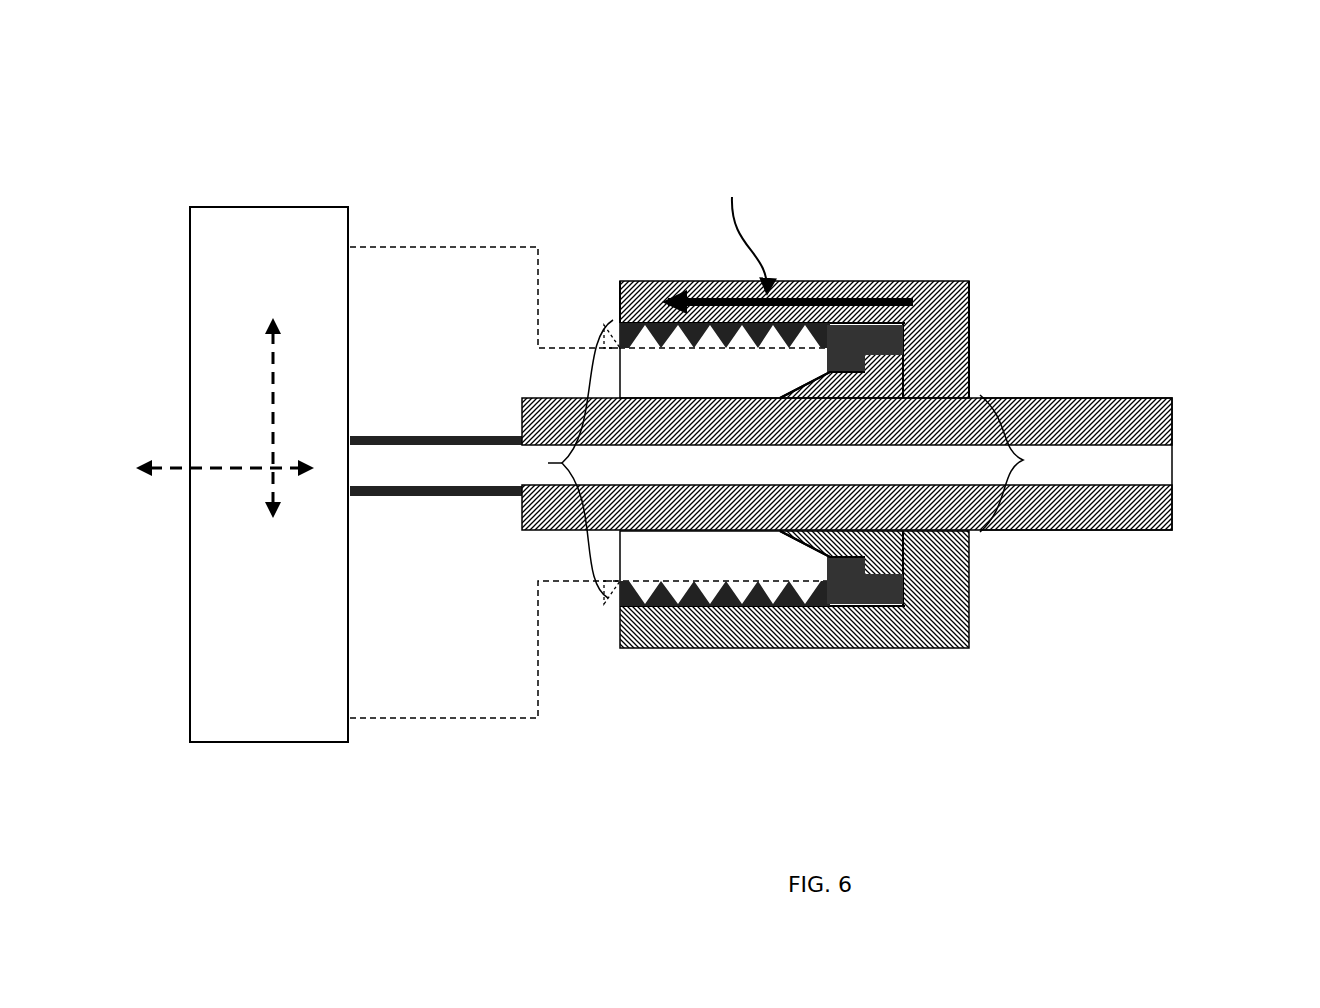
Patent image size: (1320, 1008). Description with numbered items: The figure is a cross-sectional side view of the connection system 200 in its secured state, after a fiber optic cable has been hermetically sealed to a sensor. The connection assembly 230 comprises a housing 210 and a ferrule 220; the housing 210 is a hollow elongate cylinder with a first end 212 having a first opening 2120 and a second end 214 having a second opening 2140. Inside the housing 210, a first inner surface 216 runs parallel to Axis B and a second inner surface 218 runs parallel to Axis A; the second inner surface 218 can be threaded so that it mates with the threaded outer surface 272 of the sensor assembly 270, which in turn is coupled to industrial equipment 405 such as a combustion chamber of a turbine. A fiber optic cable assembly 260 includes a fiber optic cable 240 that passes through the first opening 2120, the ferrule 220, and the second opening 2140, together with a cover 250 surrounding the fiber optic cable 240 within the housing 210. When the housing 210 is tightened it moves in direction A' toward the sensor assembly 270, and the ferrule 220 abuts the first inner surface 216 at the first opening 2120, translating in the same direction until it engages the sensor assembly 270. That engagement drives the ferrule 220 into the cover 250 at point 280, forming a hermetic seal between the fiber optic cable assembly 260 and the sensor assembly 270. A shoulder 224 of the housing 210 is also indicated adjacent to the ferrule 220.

The connection system 200 is at (325, 138).
The industrial equipment 405 is at (247, 698).
The sensor assembly 270 is at (420, 612).
The outer surface 272 is at (608, 596).
The second end 214 is at (614, 305).
The housing 210 is at (767, 277).
The connection assembly 230 is at (767, 240).
The second inner surface 218 is at (788, 320).
The first inner surface 216 is at (902, 318).
The first end 212 is at (976, 313).
The shoulder 224 is at (890, 353).
The fiber optic cable assembly 260 is at (1131, 388).
The fiber optic cable 240 is at (1140, 466).
The cover 250 is at (1123, 508).
The first opening 2120 is at (1027, 463).
The second opening 2140 is at (559, 459).
The point 280 is at (782, 410).
The ferrule 220 is at (892, 545).